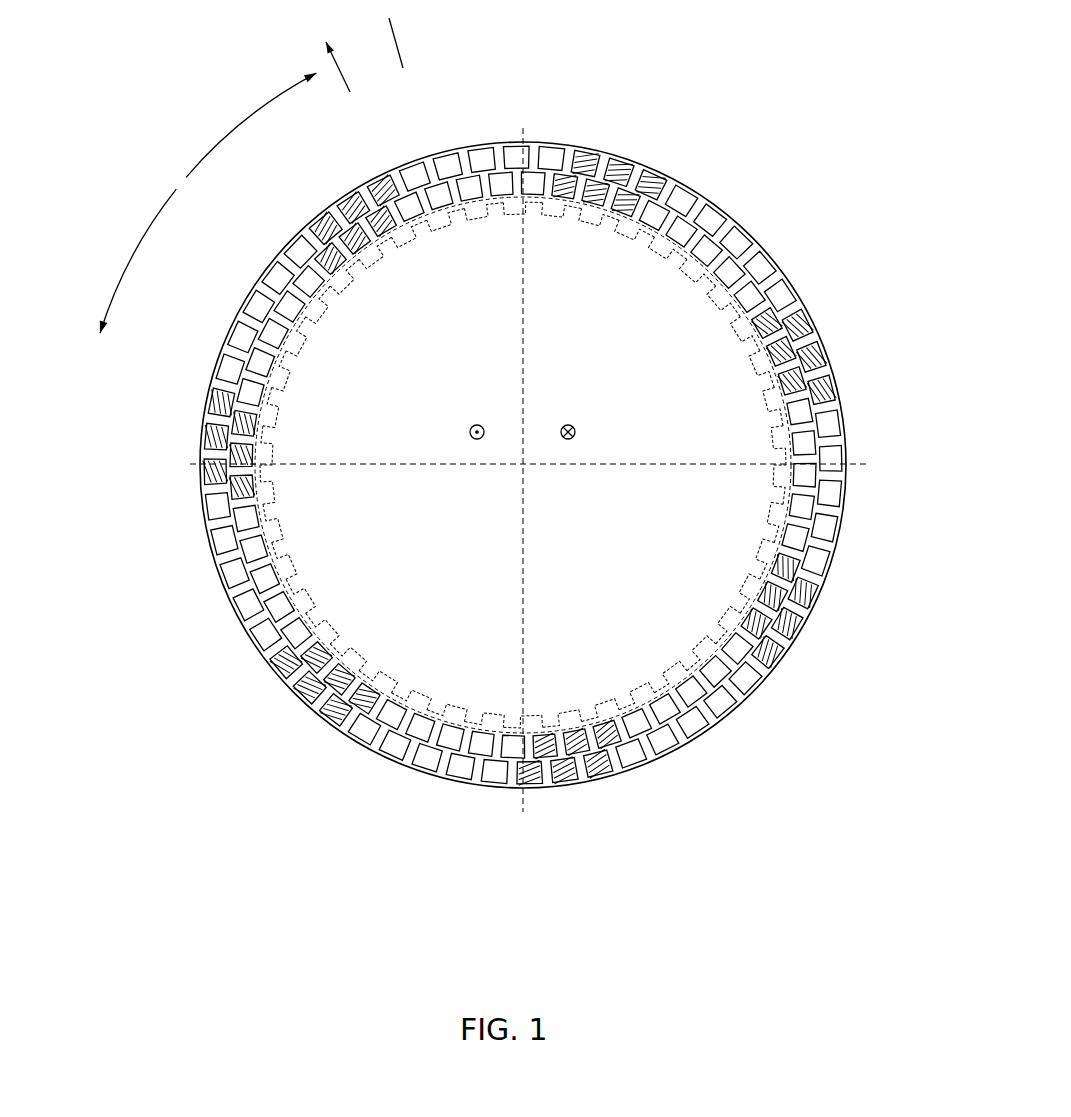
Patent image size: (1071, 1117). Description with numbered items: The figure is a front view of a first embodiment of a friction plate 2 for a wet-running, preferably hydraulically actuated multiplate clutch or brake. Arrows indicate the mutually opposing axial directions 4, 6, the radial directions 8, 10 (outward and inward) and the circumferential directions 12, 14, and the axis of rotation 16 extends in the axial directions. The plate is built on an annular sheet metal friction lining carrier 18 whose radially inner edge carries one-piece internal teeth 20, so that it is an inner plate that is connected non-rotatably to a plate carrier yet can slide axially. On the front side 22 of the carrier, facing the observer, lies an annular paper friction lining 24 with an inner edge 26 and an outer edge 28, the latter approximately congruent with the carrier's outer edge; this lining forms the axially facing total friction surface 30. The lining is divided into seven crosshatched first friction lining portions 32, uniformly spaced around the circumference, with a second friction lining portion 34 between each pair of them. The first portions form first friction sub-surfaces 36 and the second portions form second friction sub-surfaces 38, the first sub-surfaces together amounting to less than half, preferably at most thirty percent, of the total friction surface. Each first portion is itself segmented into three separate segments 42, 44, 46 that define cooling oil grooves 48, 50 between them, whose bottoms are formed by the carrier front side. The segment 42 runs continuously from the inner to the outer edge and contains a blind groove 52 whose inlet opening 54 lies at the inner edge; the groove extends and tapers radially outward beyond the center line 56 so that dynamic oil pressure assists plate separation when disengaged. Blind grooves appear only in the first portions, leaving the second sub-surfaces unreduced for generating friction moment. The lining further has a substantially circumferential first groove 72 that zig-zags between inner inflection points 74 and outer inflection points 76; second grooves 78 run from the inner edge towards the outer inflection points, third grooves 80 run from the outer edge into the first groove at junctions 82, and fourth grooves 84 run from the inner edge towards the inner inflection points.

The friction plate 2 is at (837, 133).
The axial direction 4 is at (480, 425).
The axial direction 6 is at (565, 425).
The radial direction 8 is at (342, 67).
The radial direction 10 is at (405, 43).
The circumferential direction 12 is at (140, 241).
The circumferential direction 14 is at (240, 125).
The axis of rotation 16 is at (520, 470).
The friction lining carrier 18 is at (750, 330).
The internal teeth 20 is at (773, 407).
The front side 22 is at (687, 657).
The paper friction lining 24 is at (783, 288).
The inner edge 26 is at (717, 278).
The outer edge 28 is at (767, 253).
The total friction surface 30 is at (837, 415).
The first friction lining portion 32 is at (392, 243).
The second friction lining portion 34 is at (437, 220).
The first friction sub-surface 36 is at (370, 182).
The second friction sub-surface 38 is at (440, 163).
The segment 42 is at (608, 158).
The segment 44 is at (580, 152).
The segment 46 is at (655, 177).
The cooling oil groove 48 is at (600, 153).
The cooling oil groove 50 is at (637, 172).
The blind groove 52 is at (613, 180).
The inlet opening 54 is at (620, 157).
The center line 56 is at (303, 623).
The first groove 72 is at (273, 373).
The inner inflection point 74 is at (283, 368).
The outer inflection point 76 is at (258, 307).
The second groove 78 is at (818, 425).
The third groove 80 is at (827, 568).
The junction 82 is at (253, 320).
The fourth groove 84 is at (290, 367).